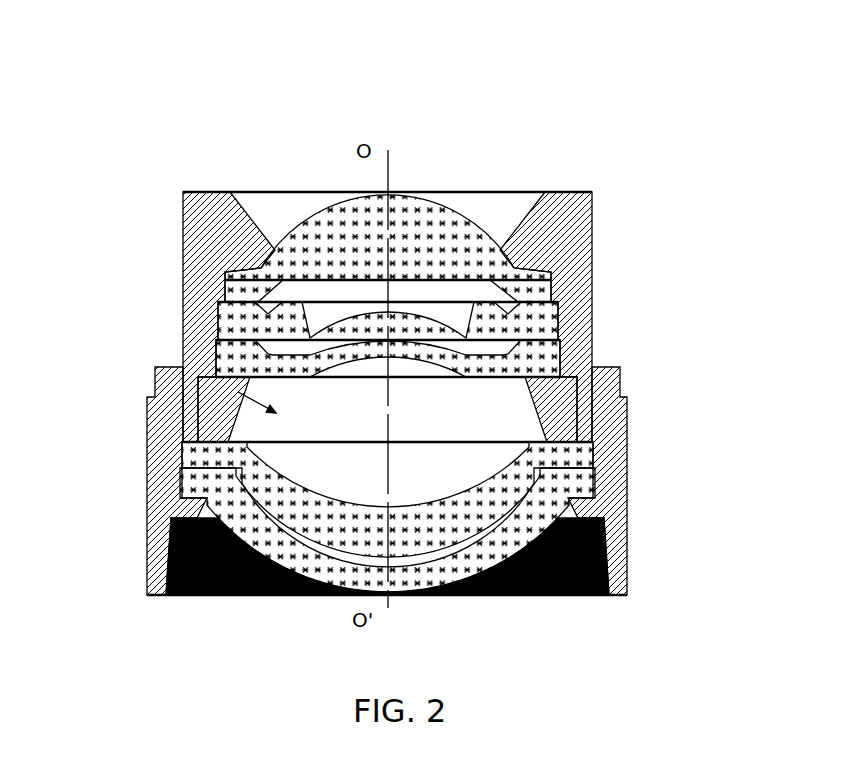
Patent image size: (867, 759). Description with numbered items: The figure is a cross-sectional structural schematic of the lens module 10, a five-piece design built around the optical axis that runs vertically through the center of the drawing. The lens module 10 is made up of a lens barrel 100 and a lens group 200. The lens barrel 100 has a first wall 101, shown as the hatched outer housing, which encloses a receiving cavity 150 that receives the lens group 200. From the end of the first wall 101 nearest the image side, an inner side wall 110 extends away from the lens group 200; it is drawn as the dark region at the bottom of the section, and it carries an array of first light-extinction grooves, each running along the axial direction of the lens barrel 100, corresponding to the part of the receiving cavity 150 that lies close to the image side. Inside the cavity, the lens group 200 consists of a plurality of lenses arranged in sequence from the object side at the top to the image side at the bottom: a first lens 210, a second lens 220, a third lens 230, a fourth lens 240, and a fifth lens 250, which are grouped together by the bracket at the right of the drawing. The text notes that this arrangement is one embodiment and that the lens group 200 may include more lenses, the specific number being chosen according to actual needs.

The lens module 10 is at (396, 112).
The lens barrel 100 is at (183, 248).
The first wall 101 is at (585, 226).
The inner side wall 110 is at (612, 540).
The receiving cavity 150 is at (148, 408).
The lens group 200 is at (465, 393).
The first lens 210 is at (548, 290).
The second lens 220 is at (553, 325).
The third lens 230 is at (557, 366).
The fourth lens 240 is at (560, 455).
The fifth lens 250 is at (435, 530).